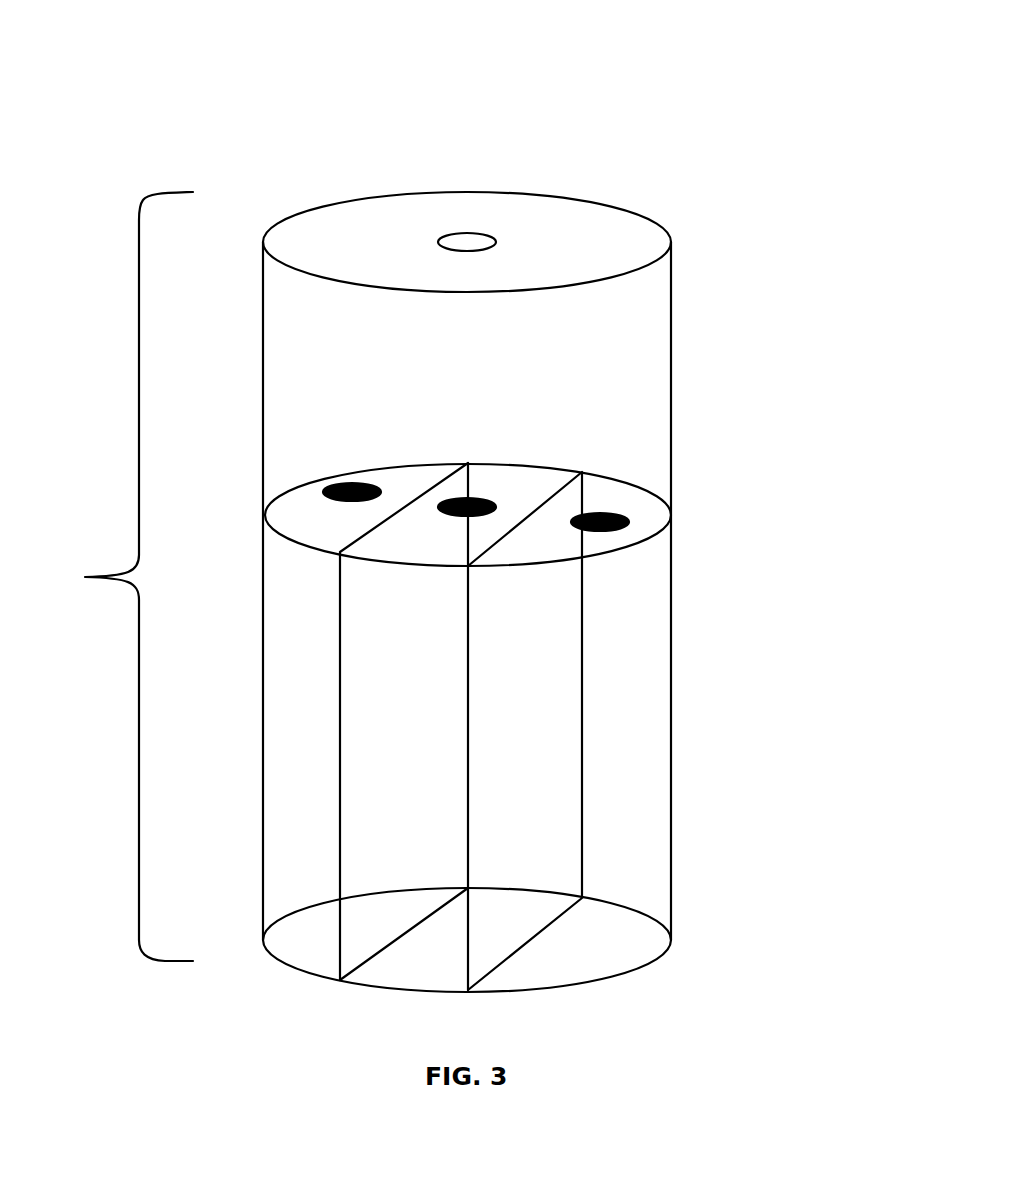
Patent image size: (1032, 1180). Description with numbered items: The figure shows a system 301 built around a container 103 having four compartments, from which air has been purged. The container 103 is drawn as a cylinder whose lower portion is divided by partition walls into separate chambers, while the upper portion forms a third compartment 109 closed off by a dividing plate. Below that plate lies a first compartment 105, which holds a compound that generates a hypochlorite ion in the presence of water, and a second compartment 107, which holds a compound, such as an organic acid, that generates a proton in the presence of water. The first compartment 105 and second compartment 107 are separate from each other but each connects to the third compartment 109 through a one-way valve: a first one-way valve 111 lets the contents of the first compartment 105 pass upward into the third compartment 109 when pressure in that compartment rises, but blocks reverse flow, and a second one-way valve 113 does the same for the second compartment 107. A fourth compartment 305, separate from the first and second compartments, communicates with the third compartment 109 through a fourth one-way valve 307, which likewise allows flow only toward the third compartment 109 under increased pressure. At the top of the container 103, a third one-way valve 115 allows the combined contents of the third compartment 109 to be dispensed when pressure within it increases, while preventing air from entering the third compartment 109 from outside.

The system 301 is at (377, 77).
The container 103 is at (105, 576).
The third one-way valve 115 is at (468, 241).
The third compartment 109 is at (535, 380).
The first one-way valve 111 is at (363, 483).
The fourth one-way valve 307 is at (467, 498).
The second one-way valve 113 is at (608, 517).
The first compartment 105 is at (287, 807).
The fourth compartment 305 is at (425, 848).
The second compartment 107 is at (637, 857).